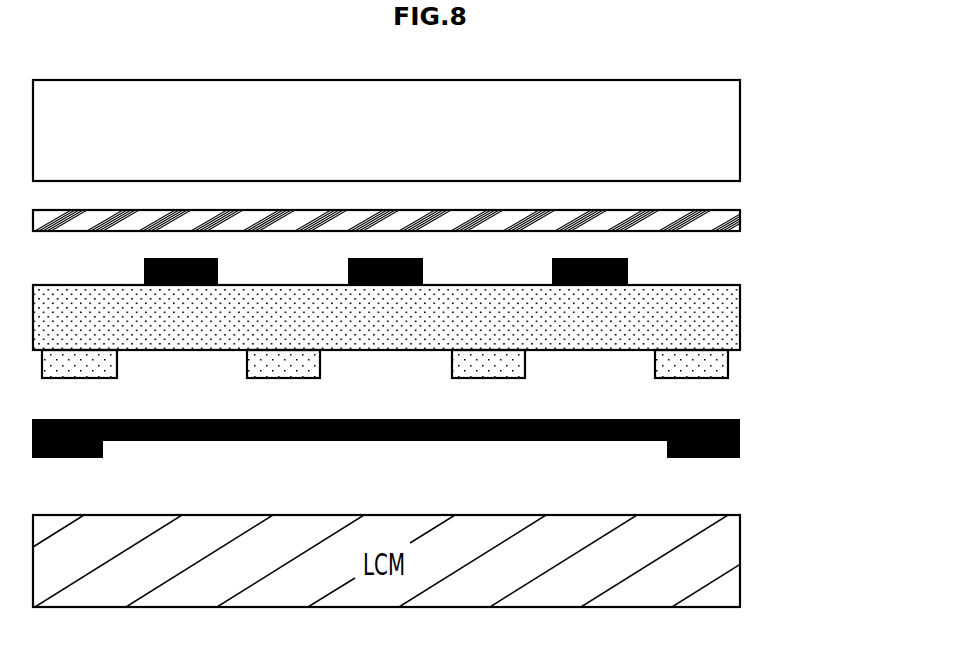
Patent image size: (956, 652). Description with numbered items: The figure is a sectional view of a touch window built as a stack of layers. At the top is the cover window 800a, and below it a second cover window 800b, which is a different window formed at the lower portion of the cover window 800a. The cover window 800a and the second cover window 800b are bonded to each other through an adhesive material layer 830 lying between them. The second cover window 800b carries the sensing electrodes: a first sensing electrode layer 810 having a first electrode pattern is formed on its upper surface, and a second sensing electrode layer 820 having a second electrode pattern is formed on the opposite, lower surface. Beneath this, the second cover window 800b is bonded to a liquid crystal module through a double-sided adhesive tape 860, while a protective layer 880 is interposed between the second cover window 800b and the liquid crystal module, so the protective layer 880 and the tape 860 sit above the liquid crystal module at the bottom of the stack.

The cover window 800a is at (728, 124).
The adhesive material layer 830 is at (740, 216).
The first sensing electrode layer 810 is at (628, 275).
The second cover window 800b is at (728, 317).
The second sensing electrode layer 820 is at (717, 363).
The protective layer 880 is at (743, 428).
The double-sided adhesive tape 860 is at (743, 447).